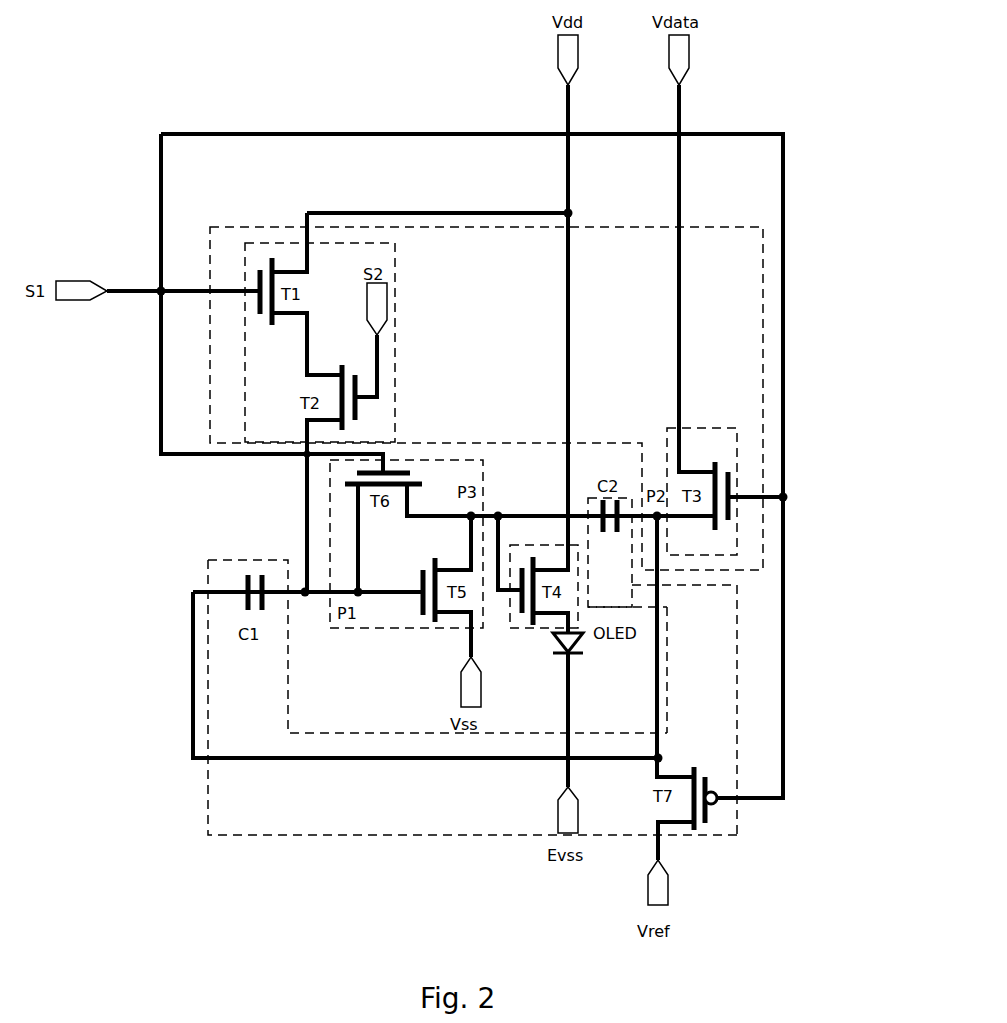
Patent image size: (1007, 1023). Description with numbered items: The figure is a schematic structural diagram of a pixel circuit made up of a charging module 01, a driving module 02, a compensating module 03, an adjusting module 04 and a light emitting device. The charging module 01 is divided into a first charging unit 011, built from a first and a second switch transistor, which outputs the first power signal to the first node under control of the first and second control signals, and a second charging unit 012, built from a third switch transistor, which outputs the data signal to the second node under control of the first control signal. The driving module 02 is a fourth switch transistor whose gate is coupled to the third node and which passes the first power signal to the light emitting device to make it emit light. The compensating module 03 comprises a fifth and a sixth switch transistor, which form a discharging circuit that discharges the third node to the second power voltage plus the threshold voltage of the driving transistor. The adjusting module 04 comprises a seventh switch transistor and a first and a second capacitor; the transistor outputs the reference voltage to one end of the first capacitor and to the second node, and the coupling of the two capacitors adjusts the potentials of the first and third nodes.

The charging module 01 is at (763, 293).
The first charging unit 011 is at (272, 243).
The second charging unit 012 is at (737, 444).
The driving module 02 is at (518, 630).
The compensating module 03 is at (340, 628).
The adjusting module 04 is at (738, 717).